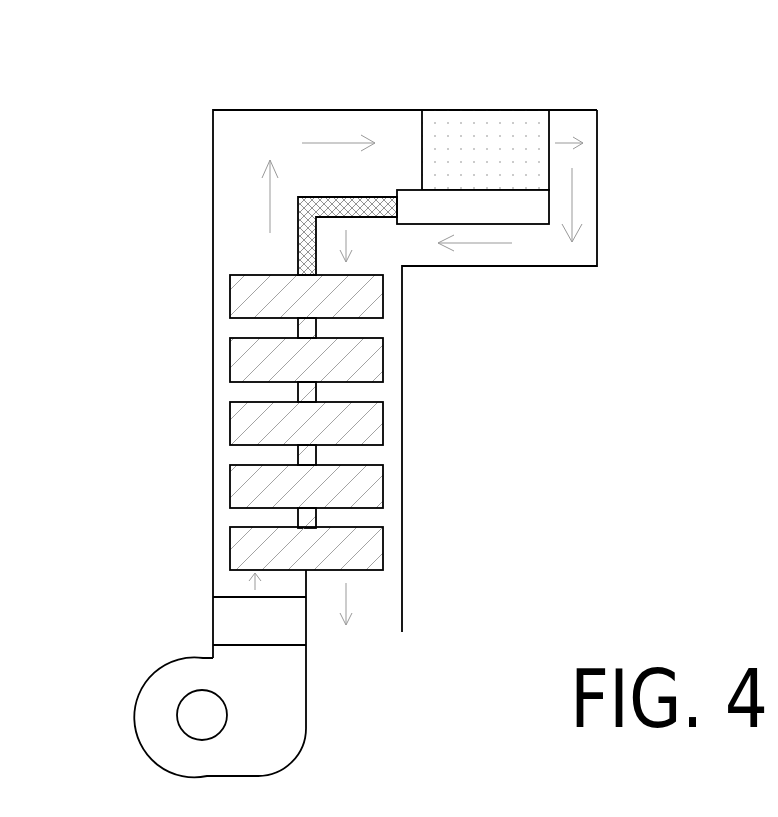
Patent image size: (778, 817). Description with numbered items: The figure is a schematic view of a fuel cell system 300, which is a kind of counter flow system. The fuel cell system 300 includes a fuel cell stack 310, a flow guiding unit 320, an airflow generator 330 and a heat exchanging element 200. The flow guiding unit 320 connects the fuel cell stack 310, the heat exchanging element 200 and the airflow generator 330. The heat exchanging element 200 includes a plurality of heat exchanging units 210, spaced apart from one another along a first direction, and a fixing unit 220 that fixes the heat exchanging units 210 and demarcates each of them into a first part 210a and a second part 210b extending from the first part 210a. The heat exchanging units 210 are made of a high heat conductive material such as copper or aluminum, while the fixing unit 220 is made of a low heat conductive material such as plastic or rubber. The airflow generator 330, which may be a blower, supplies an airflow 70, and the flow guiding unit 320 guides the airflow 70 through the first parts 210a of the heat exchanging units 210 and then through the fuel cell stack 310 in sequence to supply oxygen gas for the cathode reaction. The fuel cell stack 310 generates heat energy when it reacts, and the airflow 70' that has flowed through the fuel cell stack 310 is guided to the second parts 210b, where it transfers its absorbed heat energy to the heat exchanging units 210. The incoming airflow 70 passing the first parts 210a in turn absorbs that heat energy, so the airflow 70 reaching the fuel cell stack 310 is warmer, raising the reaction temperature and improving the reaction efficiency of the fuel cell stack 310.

The fuel cell system 300 is at (580, 618).
The fuel cell stack 310 is at (488, 118).
The flow guiding unit 320 is at (598, 189).
The airflow generator 330 is at (307, 697).
The heat exchanging element 200 is at (287, 380).
The heat exchanging units 210 is at (233, 298).
The fixing unit 220 is at (300, 330).
The first part 210a is at (250, 272).
The second part 210b is at (373, 252).
The airflow 70 is at (215, 648).
The airflow flowing through the fuel cell stack 70' is at (595, 99).